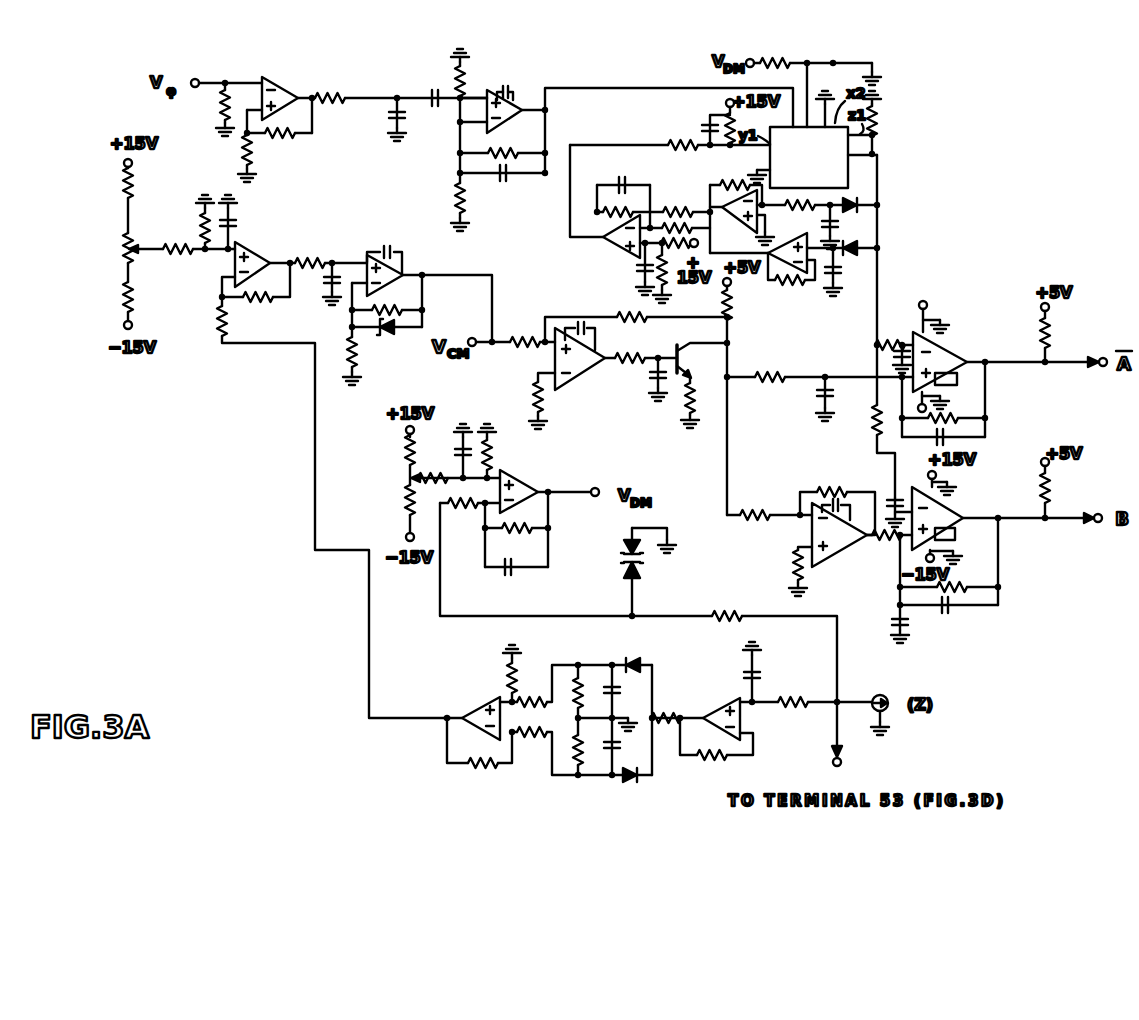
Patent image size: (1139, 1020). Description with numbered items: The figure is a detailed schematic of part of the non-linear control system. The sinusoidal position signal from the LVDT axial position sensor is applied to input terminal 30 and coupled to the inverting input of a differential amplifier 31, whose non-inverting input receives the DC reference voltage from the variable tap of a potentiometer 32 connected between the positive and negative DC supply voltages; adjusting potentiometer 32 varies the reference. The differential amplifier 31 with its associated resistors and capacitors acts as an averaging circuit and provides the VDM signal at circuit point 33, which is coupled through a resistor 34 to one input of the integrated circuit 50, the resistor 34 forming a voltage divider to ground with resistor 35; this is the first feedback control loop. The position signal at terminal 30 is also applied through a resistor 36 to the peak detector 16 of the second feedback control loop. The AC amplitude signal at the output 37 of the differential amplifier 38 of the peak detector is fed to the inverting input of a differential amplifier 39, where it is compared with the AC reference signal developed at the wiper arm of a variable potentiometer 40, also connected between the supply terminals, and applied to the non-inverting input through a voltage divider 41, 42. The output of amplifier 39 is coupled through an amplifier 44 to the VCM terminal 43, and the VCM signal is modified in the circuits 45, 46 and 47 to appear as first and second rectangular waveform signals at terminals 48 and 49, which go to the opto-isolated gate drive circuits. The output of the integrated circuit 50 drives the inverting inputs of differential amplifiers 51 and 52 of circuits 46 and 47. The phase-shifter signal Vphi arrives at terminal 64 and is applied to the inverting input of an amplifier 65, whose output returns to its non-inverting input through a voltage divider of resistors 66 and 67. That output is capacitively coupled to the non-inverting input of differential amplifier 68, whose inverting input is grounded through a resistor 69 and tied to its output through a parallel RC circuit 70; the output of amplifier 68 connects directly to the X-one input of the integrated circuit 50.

The peak detector 16 is at (678, 684).
The input terminal 30 is at (881, 695).
The differential amplifier 31 is at (516, 480).
The potentiometer 32 is at (407, 477).
The circuit point 33 is at (755, 67).
The resistor 34 is at (797, 60).
The resistor 35 is at (882, 74).
The resistor 36 is at (796, 700).
The output 37 is at (444, 722).
The differential amplifier 38 is at (486, 698).
The differential amplifier 39 is at (257, 250).
The variable potentiometer 40 is at (125, 249).
The voltage divider resistor 41 is at (172, 246).
The voltage divider resistor 42 is at (200, 225).
The VCM terminal 43 is at (474, 338).
The amplifier 44 is at (372, 254).
The circuit 45 is at (594, 405).
The circuit 46 is at (951, 373).
The circuit 47 is at (957, 542).
The terminal 48 is at (1101, 369).
The terminal 49 is at (1108, 525).
The integrated circuit 50 is at (850, 177).
The differential amplifier 51 is at (952, 363).
The differential amplifier 52 is at (948, 521).
The terminal 64 is at (197, 88).
The amplifier 65 is at (281, 82).
The resistor 66 is at (285, 139).
The resistor 67 is at (245, 143).
The differential amplifier 68 is at (518, 92).
The resistor 69 is at (458, 194).
The parallel RC circuit 70 is at (509, 213).